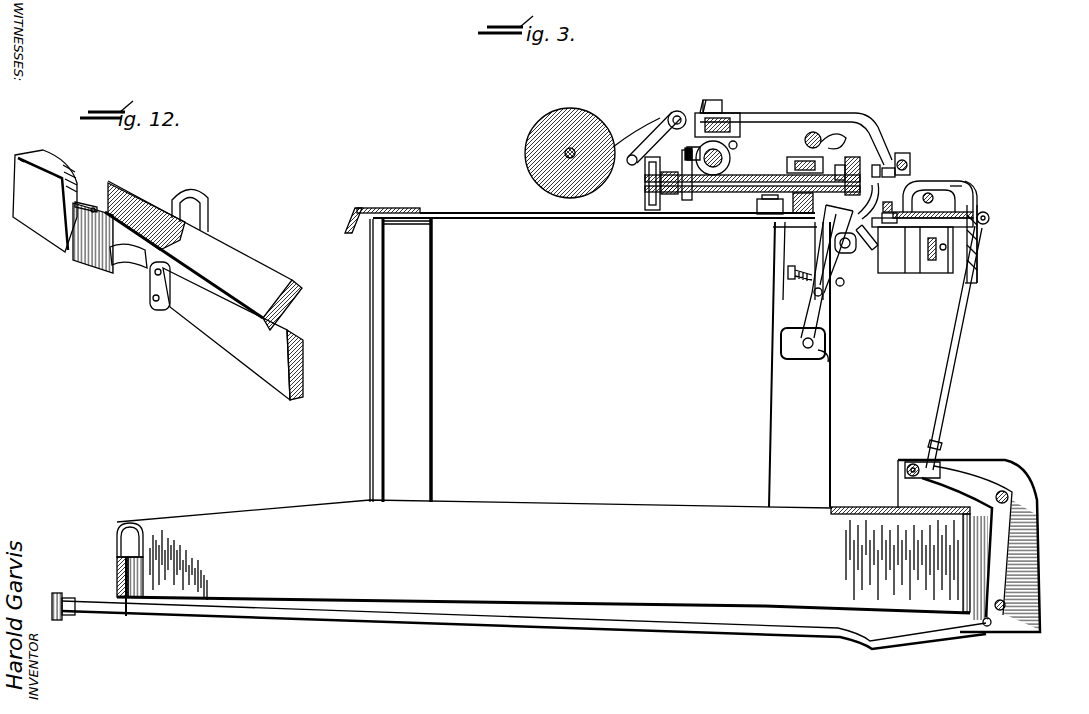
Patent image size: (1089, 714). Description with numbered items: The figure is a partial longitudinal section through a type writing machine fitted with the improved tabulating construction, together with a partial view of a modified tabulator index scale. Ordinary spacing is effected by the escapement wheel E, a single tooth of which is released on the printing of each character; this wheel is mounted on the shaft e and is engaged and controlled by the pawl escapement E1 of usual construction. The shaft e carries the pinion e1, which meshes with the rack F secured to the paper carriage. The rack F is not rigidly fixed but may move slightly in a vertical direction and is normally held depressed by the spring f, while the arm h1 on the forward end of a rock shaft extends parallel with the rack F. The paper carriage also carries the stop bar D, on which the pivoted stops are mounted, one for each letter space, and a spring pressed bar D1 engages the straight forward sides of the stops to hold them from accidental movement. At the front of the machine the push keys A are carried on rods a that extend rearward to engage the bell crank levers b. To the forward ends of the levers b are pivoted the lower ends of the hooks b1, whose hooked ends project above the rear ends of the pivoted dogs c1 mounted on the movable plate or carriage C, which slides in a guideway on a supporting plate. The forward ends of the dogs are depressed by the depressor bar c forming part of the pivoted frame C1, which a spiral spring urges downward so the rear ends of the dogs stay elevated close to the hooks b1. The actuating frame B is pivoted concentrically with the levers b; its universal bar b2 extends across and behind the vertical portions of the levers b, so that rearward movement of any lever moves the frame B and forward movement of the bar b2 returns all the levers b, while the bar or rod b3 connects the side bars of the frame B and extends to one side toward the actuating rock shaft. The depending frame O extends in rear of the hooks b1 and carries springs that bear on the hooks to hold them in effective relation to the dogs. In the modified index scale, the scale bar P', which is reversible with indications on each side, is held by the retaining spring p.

In FIG. 3, the rack F is at (657, 120).
In FIG. 3, the spring f is at (692, 125).
In FIG. 3, the escapement wheel E is at (845, 157).
In FIG. 3, the shaft e is at (777, 175).
In FIG. 3, the rods a is at (548, 631).
In FIG. 3, the push keys A is at (58, 593).
In FIG. 3, the stop bar D is at (905, 162).
In FIG. 3, the spring pressed bar D1 is at (927, 181).
In FIG. 3, the depressor bar c is at (876, 214).
In FIG. 3, the movable plate or carriage C is at (938, 210).
In FIG. 3, the pivoted stop or dog c1 is at (956, 190).
In FIG. 3, the pivoted frame C1 is at (982, 206).
In FIG. 3, the depending frame O is at (977, 243).
In FIG. 3, the arm h1 is at (672, 197).
In FIG. 3, the pinion e1 is at (686, 200).
In FIG. 3, the pawl escapement E1 is at (842, 256).
In FIG. 3, the hook b1 is at (957, 337).
In FIG. 3, the bar or rod b3 is at (913, 464).
In FIG. 3, the actuating frame B is at (952, 468).
In FIG. 3, the bell crank lever b is at (1004, 529).
In FIG. 3, the universal bar b2 is at (995, 607).
In FIG. 12, the retaining spring p is at (197, 193).
In FIG. 12, the scale bar P' is at (203, 255).